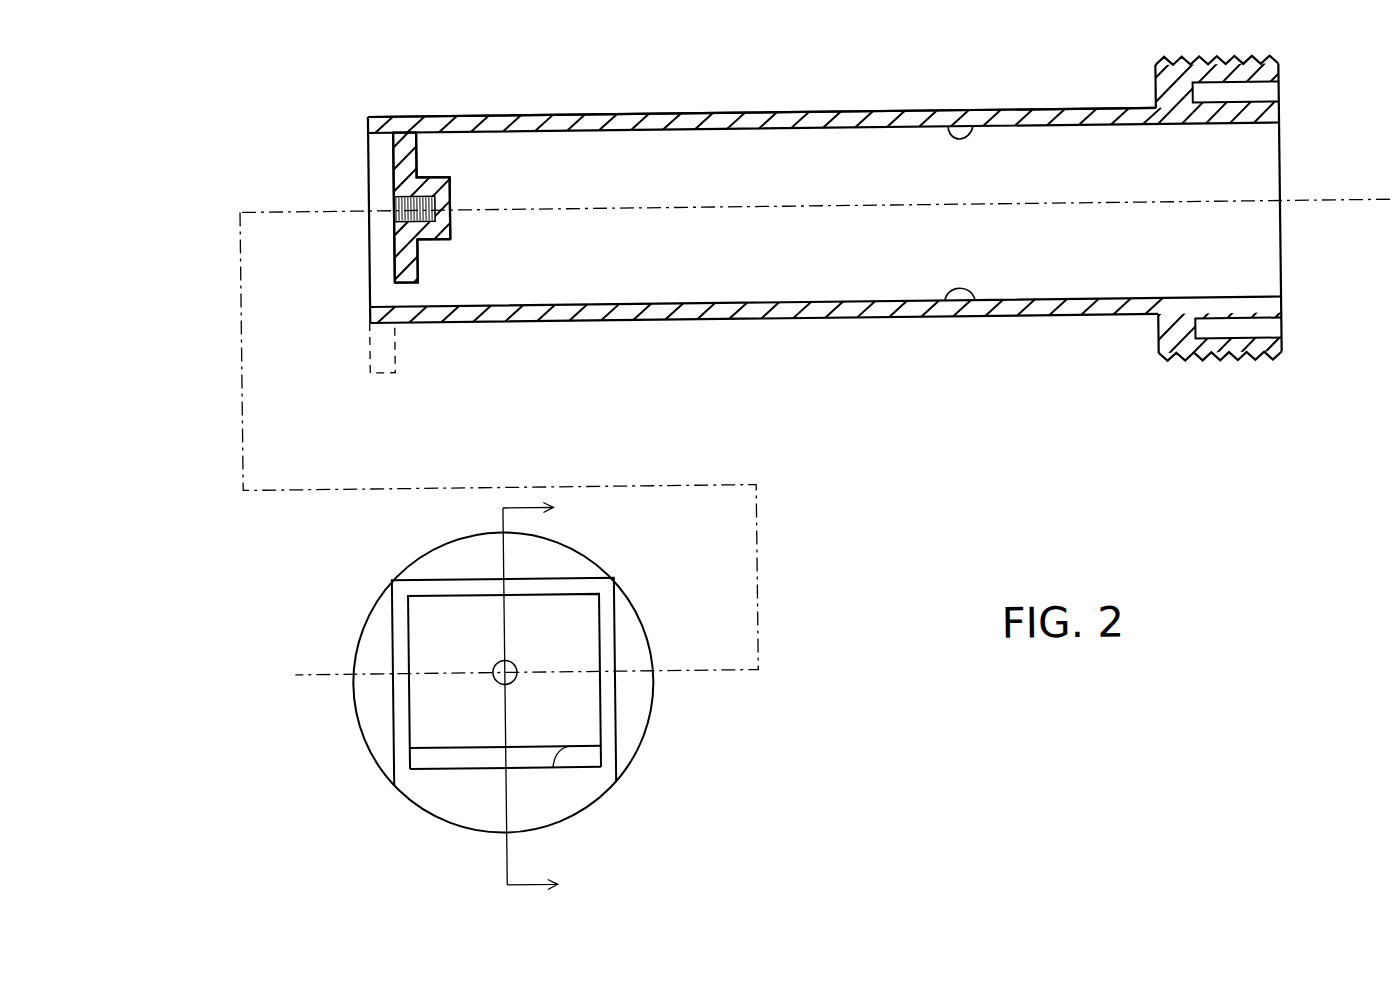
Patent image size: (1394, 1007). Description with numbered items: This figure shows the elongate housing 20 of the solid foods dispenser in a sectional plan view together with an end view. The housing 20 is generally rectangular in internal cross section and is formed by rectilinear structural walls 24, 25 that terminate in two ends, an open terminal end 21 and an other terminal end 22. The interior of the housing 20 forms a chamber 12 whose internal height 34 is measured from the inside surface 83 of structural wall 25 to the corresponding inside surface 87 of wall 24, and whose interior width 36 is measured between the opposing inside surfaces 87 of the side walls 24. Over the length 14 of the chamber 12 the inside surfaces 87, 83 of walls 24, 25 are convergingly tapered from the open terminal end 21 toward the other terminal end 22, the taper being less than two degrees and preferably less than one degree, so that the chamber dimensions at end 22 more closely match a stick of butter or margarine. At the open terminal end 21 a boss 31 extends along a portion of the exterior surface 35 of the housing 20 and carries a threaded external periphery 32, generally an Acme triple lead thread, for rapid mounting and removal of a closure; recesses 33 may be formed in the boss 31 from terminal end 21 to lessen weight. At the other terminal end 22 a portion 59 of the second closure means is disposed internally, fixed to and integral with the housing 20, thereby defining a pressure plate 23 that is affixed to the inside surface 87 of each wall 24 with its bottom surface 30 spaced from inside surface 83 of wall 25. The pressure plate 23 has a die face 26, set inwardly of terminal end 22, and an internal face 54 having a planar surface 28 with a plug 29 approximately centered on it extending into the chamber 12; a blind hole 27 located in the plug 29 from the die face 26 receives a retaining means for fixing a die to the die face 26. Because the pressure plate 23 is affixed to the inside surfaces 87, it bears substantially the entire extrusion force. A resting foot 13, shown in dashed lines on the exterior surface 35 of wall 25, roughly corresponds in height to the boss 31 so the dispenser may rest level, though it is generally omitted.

The chamber 12 is at (1000, 204).
The resting foot 13 is at (373, 373).
The length 14 is at (417, 270).
The elongate housing 20 is at (644, 375).
The terminal end 21 is at (1282, 194).
The terminal end 22 is at (367, 292).
The pressure plate 23 is at (404, 155).
The structural wall 24 is at (904, 126).
The structural wall 25 is at (901, 319).
The die face 26 is at (393, 163).
The blind hole 27 is at (397, 208).
The planar surface 28 is at (413, 188).
The plug 29 is at (450, 204).
The bottom surface 30 is at (402, 283).
The boss 31 is at (1174, 341).
The threaded external periphery 32 is at (1216, 365).
The recesses 33 is at (1264, 337).
The internal height 34 is at (1133, 133).
The exterior surface 35 is at (1026, 120).
The interior width 36 is at (404, 654).
The internal face 54 is at (550, 204).
The portion of second closure means 59 is at (413, 230).
The inside surface 83 is at (944, 307).
The inside surface 87 is at (947, 133).